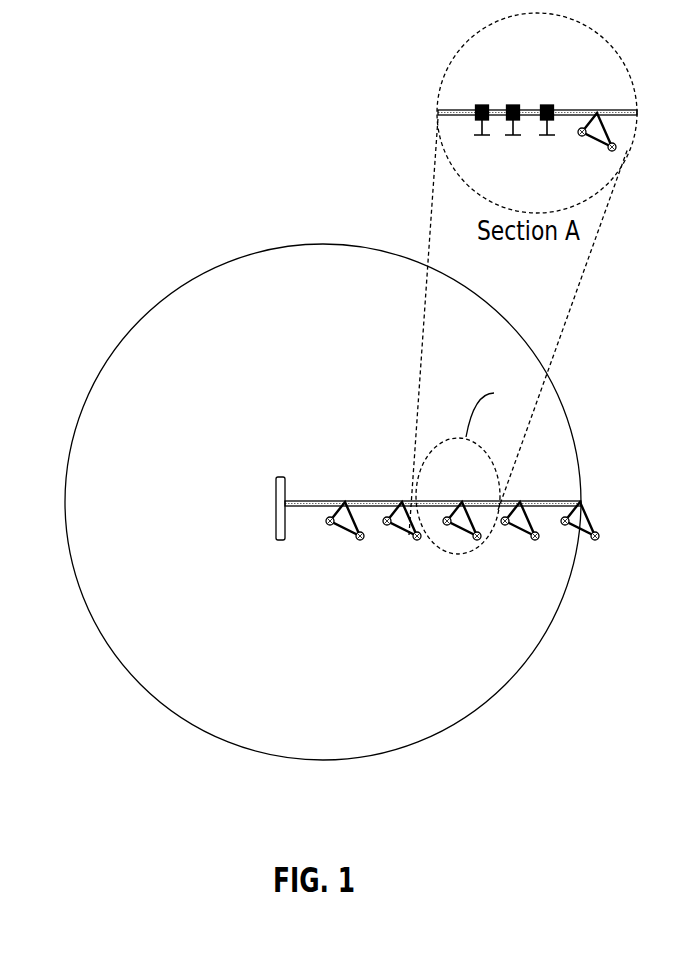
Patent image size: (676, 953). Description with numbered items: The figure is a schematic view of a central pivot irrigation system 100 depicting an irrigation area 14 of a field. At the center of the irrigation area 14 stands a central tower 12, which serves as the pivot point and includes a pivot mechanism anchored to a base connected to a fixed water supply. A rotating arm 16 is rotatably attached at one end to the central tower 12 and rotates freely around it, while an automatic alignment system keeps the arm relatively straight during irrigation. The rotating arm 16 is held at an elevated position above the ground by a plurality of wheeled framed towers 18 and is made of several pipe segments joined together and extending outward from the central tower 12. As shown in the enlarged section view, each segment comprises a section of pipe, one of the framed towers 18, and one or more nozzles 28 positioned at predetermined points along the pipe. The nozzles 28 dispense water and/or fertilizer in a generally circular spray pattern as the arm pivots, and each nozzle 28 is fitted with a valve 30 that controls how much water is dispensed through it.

The central pivot system 100 is at (77, 237).
The central tower 12 is at (280, 476).
The irrigation area 14 is at (333, 346).
The rotating arm 16 is at (430, 500).
The wheeled framed towers 18 is at (336, 539).
The nozzles 28 is at (483, 139).
The valve 30 is at (514, 104).